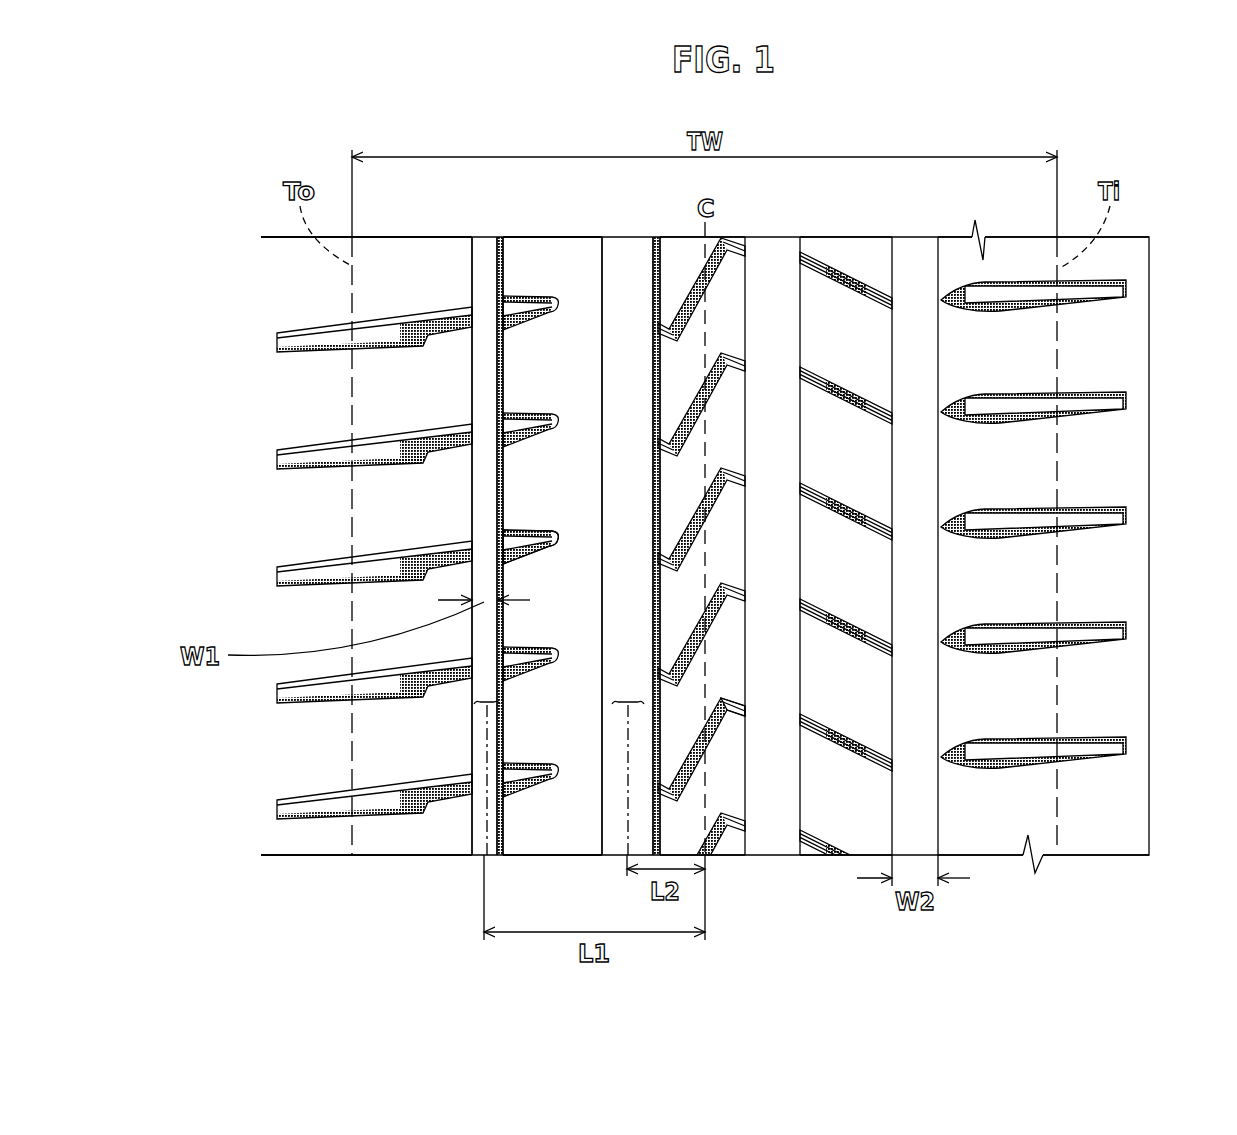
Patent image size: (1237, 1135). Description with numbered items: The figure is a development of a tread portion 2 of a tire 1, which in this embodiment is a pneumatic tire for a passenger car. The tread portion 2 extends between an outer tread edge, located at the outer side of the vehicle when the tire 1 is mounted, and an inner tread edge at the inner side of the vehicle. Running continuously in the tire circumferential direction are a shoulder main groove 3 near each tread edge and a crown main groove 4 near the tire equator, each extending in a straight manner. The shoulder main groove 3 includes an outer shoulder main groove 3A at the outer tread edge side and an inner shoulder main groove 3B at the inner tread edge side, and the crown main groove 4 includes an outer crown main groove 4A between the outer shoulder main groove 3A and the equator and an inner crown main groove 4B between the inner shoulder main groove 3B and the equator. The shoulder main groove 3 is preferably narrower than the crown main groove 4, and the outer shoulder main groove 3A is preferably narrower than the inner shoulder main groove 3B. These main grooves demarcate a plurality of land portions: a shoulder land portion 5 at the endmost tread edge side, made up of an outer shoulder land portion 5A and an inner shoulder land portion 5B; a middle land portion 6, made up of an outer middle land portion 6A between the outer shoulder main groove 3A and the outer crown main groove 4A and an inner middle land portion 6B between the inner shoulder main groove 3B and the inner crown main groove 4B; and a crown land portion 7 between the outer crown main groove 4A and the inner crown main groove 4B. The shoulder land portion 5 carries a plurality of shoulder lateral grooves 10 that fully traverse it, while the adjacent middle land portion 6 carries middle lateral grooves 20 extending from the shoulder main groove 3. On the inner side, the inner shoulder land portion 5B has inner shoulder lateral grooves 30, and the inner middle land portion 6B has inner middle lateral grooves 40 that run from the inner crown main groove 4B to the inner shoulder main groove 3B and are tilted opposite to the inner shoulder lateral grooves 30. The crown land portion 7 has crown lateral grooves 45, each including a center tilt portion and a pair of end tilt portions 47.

The tire 1 is at (850, 236).
The tread portion 2 is at (561, 236).
The shoulder main groove 3 is at (486, 268).
The outer shoulder main groove 3A is at (486, 268).
The inner shoulder main groove 3B is at (914, 278).
The crown main groove 4 is at (630, 268).
The outer crown main groove 4A is at (630, 268).
The inner crown main groove 4B is at (768, 278).
The shoulder land portion 5 is at (401, 825).
The outer shoulder land portion 5A is at (401, 825).
The inner shoulder land portion 5B is at (995, 819).
The middle land portion 6 is at (556, 817).
The outer middle land portion 6A is at (556, 817).
The inner middle land portion 6B is at (843, 819).
The crown land portion 7 is at (714, 792).
The shoulder lateral groove 10 is at (390, 448).
The middle lateral groove 20 is at (530, 545).
The inner shoulder lateral groove 30 is at (1012, 410).
The inner middle lateral groove 40 is at (852, 510).
The crown lateral groove 45 is at (702, 636).
The end tilt portion 47 is at (736, 718).